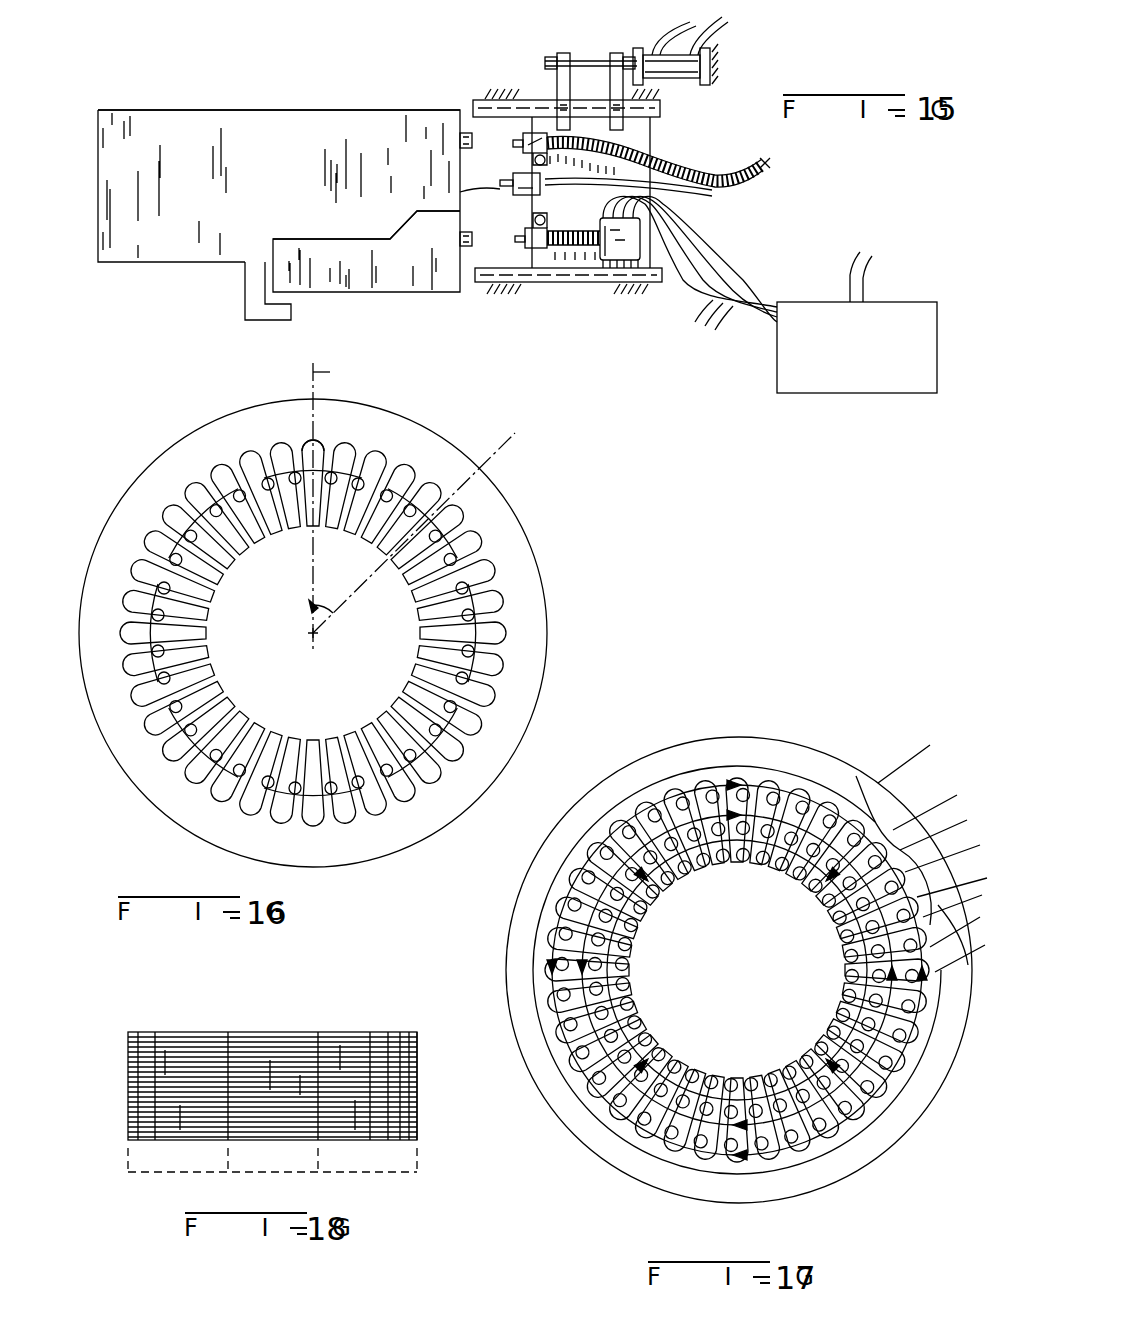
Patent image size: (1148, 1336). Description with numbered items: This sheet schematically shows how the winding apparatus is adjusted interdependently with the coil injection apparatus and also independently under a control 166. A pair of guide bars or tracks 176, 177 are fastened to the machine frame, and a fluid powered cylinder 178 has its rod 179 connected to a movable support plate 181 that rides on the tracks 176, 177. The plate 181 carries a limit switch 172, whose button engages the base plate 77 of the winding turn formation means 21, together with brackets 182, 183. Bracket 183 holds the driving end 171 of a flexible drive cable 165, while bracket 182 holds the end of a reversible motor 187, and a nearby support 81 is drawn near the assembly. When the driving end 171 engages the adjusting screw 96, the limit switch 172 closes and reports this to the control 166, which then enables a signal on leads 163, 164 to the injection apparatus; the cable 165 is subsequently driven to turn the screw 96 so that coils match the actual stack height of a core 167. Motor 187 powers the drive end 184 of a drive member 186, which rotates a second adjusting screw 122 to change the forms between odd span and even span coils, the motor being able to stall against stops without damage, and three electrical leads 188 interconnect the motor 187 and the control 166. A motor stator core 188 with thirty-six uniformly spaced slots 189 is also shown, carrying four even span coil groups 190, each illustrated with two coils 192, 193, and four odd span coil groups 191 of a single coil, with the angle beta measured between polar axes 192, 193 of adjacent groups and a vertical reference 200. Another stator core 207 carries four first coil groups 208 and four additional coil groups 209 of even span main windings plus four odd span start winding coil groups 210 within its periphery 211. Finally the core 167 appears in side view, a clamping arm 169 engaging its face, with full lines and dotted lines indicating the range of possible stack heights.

In FIG. 15, the winding turn formation means 21 is at (158, 267).
In FIG. 15, the base plate 77 is at (428, 128).
In FIG. 15, the mounting bracket 81 is at (255, 300).
In FIG. 15, the adjusting screw 96 is at (467, 132).
In FIG. 15, the adjusting screw 122 is at (456, 220).
In FIG. 15, the lead 163 is at (852, 258).
In FIG. 15, the lead 164 is at (870, 262).
In FIG. 15, the flexible drive cable 165 is at (757, 162).
In FIG. 15, the control 166 is at (835, 394).
In FIG. 18, the core 167 is at (408, 1088).
In FIG. 18, the clamping arm 169 is at (418, 1015).
In FIG. 15, the driving end 171 is at (524, 133).
In FIG. 15, the limit switch 172 is at (500, 189).
In FIG. 15, the guide bar 176 is at (577, 282).
In FIG. 15, the guide bar 177 is at (660, 107).
In FIG. 15, the fluid powered cylinder 178 is at (722, 18).
In FIG. 15, the rod 179 is at (590, 62).
In FIG. 15, the support plate 181 is at (650, 180).
In FIG. 15, the bracket 182 is at (528, 245).
In FIG. 15, the bracket 183 is at (527, 150).
In FIG. 15, the drive end 184 is at (525, 236).
In FIG. 15, the drive member 186 is at (574, 231).
In FIG. 15, the reversible motor 187 is at (626, 250).
In FIG. 15, the motor stator core 188 is at (699, 322).
In FIG. 16, the motor stator core 188 is at (535, 690).
In FIG. 16, the slots 189 is at (415, 598).
In FIG. 16, the coil groups 190 is at (328, 455).
In FIG. 16, the coil groups 191 is at (190, 512).
In FIG. 16, the coil 192 is at (326, 528).
In FIG. 16, the coil 193 is at (546, 436).
In FIG. 16, the vertical axis line 200 is at (313, 372).
In FIG. 17, the stator core 207 is at (856, 776).
In FIG. 17, the first coil groups 208 is at (737, 782).
In FIG. 17, the additional coil groups 209 is at (790, 802).
In FIG. 17, the coil groups 210 is at (650, 888).
In FIG. 17, the stator outer periphery 211 is at (565, 1133).